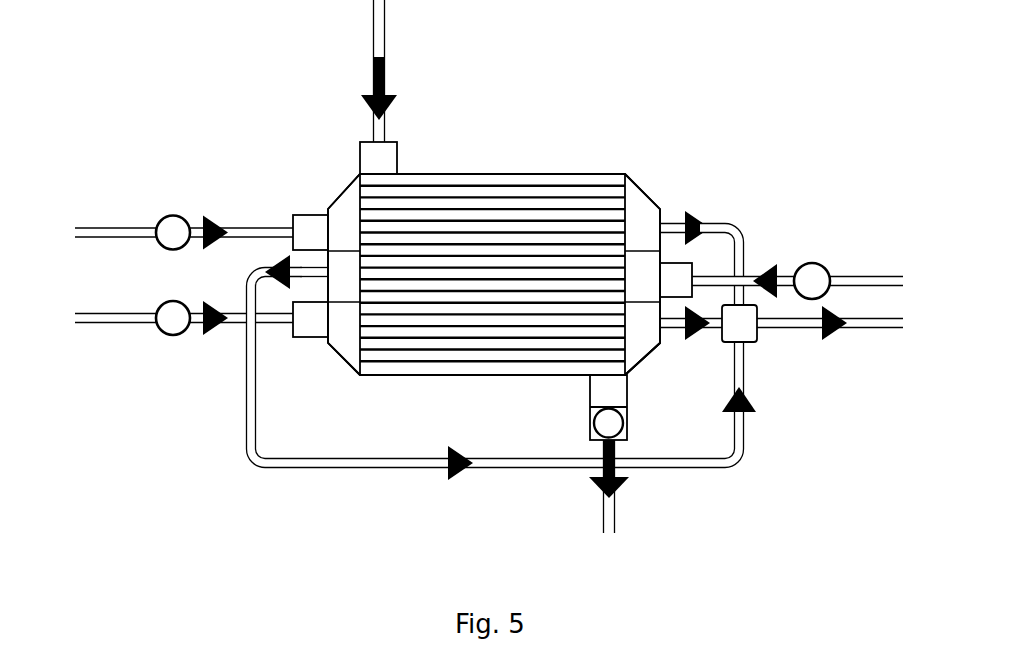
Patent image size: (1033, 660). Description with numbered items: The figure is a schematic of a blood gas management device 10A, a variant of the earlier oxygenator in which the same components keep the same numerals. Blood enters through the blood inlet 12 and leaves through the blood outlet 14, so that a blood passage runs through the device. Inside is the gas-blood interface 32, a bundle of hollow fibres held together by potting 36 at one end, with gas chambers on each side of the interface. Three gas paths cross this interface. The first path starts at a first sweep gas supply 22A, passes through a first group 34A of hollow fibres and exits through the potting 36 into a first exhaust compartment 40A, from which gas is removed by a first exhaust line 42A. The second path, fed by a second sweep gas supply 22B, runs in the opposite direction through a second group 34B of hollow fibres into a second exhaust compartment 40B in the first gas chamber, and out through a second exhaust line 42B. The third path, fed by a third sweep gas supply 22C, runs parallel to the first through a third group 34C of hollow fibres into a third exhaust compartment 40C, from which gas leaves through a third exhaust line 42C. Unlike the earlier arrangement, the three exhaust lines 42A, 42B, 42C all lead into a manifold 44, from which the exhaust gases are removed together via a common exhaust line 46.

The blood treatment device 10A is at (770, 114).
The blood inlet 12 is at (372, 62).
The blood outlet 14 is at (602, 507).
The first sweep gas supply 22A is at (117, 225).
The second sweep gas supply 22B is at (875, 273).
The third sweep gas supply 22C is at (100, 325).
The gas-blood interface 32 is at (577, 174).
The first group of hollow fibres 34A is at (440, 202).
The second group of hollow fibres 34B is at (460, 262).
The third group of hollow fibres 34C is at (500, 327).
The potting 36 is at (623, 327).
The first exhaust compartment 40A is at (647, 210).
The second exhaust compartment 40B is at (322, 288).
The third exhaust compartment 40C is at (645, 333).
The first exhaust line 42A is at (740, 233).
The second exhaust line 42B is at (302, 472).
The third exhaust line 42C is at (680, 333).
The manifold 44 is at (757, 340).
The common exhaust line 46 is at (883, 331).